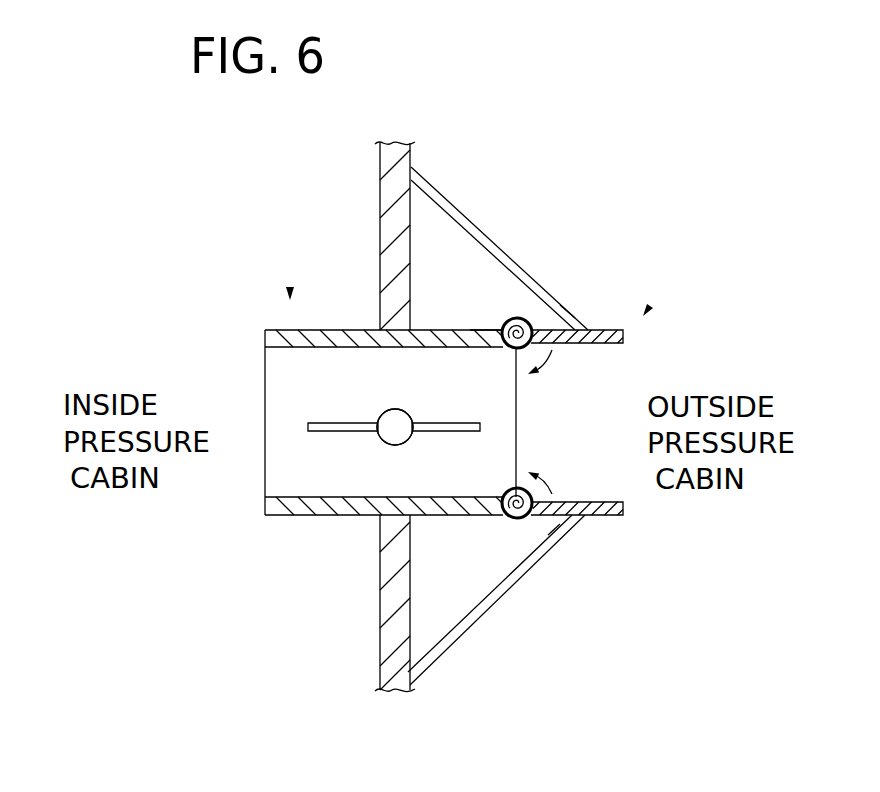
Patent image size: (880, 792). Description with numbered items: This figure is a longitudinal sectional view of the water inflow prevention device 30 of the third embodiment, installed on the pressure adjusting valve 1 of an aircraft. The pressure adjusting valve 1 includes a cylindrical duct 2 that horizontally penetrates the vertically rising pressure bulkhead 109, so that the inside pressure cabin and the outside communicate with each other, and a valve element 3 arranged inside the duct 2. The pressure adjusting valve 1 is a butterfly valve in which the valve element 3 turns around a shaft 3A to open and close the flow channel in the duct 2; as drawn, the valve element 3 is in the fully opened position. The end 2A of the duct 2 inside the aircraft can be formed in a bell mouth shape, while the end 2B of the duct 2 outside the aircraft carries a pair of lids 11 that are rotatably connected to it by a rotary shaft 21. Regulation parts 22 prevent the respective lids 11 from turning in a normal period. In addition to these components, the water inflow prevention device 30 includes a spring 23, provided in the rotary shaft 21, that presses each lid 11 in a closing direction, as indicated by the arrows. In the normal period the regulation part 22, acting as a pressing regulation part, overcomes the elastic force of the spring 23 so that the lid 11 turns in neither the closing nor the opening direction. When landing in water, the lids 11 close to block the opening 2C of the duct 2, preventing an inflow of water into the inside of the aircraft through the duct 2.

The pressure bulkhead 109 is at (380, 205).
The pressure adjusting valve 1 is at (290, 290).
The duct 2 is at (345, 330).
The end of the duct inside the aircraft 2A is at (268, 330).
The end of the duct outside the aircraft 2B is at (492, 330).
The opening of the duct 2C is at (516, 430).
The valve element 3 is at (322, 423).
The shaft 3A is at (410, 415).
The lid 11 is at (604, 330).
The rotary shaft 21 is at (543, 316).
The regulation part 22 is at (480, 216).
The spring 23 is at (520, 318).
The water inflow prevention device 30 is at (648, 310).